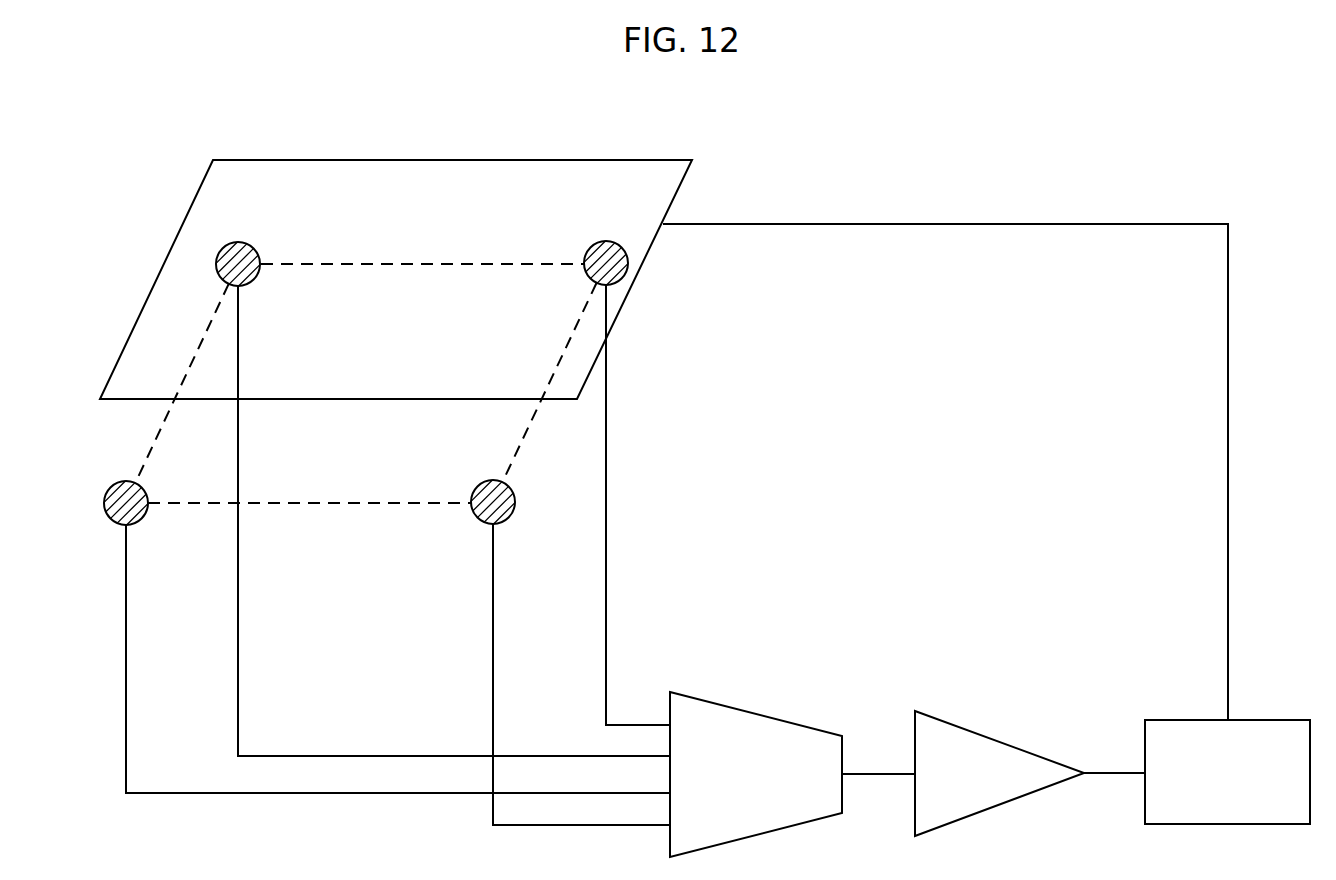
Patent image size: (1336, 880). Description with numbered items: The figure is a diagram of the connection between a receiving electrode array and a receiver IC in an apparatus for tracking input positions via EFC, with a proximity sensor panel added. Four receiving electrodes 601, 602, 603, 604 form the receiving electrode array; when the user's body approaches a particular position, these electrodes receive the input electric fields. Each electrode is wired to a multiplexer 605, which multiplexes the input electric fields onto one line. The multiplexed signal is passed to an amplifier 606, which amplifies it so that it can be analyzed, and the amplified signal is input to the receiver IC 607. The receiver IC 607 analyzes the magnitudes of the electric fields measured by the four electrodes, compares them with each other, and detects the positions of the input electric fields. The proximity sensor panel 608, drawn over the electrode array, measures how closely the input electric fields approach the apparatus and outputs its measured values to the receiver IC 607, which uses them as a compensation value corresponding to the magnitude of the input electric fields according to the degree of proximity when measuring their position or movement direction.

The receiving electrode 601 is at (256, 249).
The receiving electrode 602 is at (592, 247).
The receiving electrode 603 is at (480, 520).
The receiving electrode 604 is at (118, 480).
The multiplexer 605 is at (735, 720).
The amplifier 606 is at (976, 741).
The receiver IC 607 is at (1195, 720).
The proximity sensor panel 608 is at (537, 160).